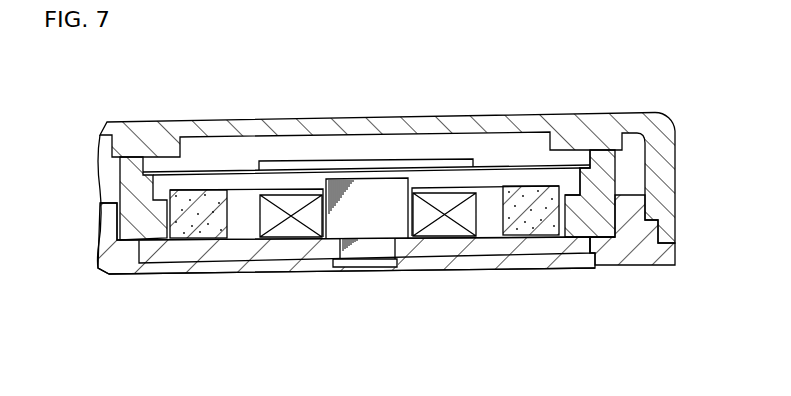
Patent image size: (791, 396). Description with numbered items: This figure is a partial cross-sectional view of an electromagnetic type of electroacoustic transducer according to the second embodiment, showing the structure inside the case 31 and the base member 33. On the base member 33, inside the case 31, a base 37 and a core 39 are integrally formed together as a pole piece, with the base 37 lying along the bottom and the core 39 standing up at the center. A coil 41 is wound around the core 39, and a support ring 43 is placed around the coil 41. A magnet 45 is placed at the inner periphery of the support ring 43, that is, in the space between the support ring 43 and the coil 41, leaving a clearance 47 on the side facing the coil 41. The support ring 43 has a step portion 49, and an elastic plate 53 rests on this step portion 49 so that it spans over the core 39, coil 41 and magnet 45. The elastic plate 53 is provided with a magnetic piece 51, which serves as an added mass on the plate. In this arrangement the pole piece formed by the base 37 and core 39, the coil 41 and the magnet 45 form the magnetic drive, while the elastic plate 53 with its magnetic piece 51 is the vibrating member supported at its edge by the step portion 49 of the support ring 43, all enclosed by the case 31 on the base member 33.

The case 31 is at (677, 153).
The base member 33 is at (677, 262).
The base 37 is at (282, 255).
The core 39 is at (382, 227).
The coil 41 is at (455, 232).
The support ring 43 is at (598, 228).
The magnet 45 is at (531, 220).
The clearance 47 is at (488, 215).
The step portion 49 is at (587, 166).
The magnetic piece 51 is at (323, 157).
The elastic plate 53 is at (230, 169).